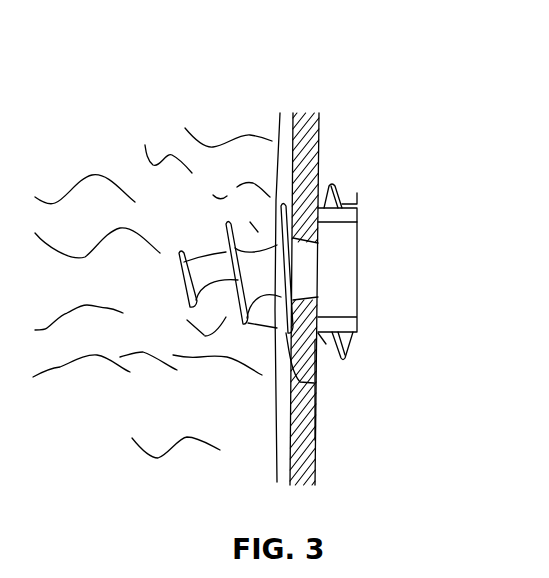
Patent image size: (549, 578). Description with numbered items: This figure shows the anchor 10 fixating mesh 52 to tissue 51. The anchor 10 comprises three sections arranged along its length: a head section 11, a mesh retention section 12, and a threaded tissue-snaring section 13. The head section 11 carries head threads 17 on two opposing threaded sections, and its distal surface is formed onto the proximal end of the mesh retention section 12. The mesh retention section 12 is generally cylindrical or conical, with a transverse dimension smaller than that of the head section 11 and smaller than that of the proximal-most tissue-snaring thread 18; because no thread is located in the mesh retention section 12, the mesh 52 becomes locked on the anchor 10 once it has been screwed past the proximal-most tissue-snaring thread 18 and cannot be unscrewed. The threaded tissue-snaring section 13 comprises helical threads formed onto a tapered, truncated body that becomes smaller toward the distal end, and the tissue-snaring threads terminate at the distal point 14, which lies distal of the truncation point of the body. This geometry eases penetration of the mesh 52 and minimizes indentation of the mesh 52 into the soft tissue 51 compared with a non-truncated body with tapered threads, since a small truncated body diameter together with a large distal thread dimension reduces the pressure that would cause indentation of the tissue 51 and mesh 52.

The anchor 10 is at (273, 83).
The head section 11 is at (357, 212).
The mesh retention section 12 is at (357, 268).
The threaded tissue-snaring section 13 is at (223, 318).
The distal point 14 is at (177, 262).
The head threads 17 is at (338, 192).
The proximal-most tissue-snaring thread 18 is at (315, 390).
The tissue 51 is at (143, 180).
The mesh 52 is at (315, 440).